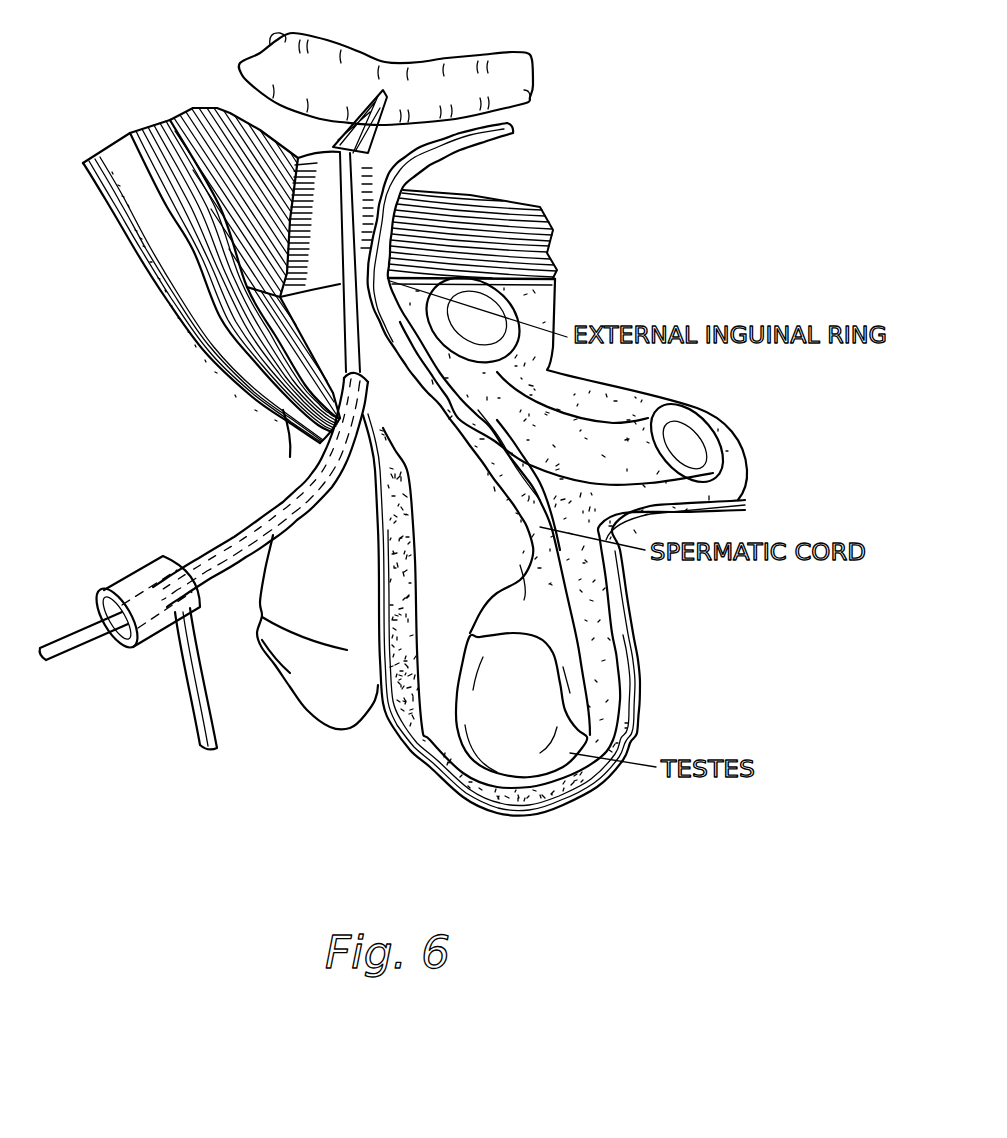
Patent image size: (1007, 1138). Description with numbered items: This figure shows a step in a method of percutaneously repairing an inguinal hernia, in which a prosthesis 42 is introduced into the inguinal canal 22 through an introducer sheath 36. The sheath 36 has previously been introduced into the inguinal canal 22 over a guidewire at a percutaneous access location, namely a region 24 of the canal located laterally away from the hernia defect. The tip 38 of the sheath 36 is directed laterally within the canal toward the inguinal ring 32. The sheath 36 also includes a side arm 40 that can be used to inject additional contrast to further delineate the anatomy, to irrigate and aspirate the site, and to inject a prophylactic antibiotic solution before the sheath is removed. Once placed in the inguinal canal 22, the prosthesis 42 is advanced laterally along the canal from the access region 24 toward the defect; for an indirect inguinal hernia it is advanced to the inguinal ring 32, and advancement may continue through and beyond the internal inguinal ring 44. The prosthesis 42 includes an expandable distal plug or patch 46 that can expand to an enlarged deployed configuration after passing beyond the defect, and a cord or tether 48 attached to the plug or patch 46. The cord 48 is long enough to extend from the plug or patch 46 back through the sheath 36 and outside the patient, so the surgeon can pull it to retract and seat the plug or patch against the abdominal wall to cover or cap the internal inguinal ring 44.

The inguinal canal 22 is at (284, 280).
The region of the inguinal canal 24 is at (335, 398).
The inguinal ring 32 is at (266, 231).
The introducer sheath 36 is at (283, 490).
The tip of the sheath 38 is at (368, 378).
The side arm 40 is at (198, 714).
The prosthesis 42 is at (341, 345).
The internal inguinal ring 44 is at (403, 190).
The expandable distal plug and/or patch 46 is at (366, 90).
The cord or tether 48 is at (76, 632).